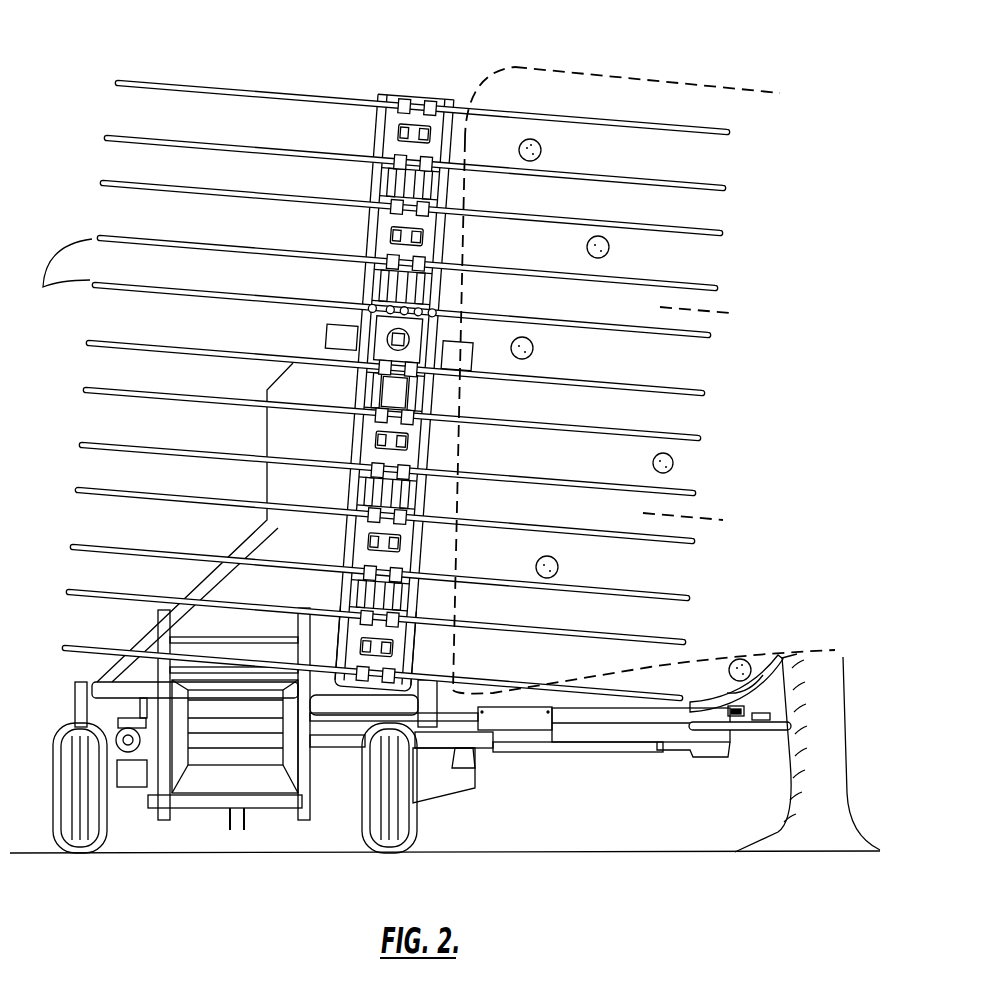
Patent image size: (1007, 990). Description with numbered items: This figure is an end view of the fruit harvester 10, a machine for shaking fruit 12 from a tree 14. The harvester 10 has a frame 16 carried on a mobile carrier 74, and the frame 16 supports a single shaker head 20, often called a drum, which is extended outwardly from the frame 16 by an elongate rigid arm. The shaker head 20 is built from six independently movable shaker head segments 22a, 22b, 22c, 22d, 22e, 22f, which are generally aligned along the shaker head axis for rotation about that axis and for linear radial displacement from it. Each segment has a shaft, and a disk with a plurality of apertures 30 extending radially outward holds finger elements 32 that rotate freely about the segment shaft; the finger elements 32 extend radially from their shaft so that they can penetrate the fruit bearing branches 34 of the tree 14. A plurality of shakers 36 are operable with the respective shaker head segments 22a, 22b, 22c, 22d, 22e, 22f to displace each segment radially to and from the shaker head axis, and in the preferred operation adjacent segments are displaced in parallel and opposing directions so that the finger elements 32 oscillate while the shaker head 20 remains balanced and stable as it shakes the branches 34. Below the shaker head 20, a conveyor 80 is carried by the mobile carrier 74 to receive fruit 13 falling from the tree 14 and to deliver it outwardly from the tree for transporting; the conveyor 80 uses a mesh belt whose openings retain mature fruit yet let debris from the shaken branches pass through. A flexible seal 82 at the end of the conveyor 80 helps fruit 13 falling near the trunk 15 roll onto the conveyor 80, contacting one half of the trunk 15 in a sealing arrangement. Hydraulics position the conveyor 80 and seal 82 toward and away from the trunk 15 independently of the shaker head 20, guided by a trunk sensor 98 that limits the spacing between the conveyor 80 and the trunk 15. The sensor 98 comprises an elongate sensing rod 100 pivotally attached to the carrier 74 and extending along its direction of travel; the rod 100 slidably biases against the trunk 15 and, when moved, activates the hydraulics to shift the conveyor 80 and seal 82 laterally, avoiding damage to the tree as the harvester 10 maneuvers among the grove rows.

The fruit harvester 10 is at (595, 90).
The fruit 12 is at (541, 145).
The fruit 13 is at (747, 661).
The tree 14 is at (713, 85).
The trunk 15 is at (843, 665).
The frame 16 is at (283, 427).
The shaker head 20 is at (103, 127).
The shaker head segment 22a is at (360, 140).
The shaker head segment 22b is at (350, 247).
The shaker head segment 22c is at (318, 345).
The shaker head segment 22d is at (333, 453).
The shaker head segment 22e is at (322, 552).
The shaker head segment 22f is at (364, 648).
The aperture 30 is at (533, 348).
The finger element 32 is at (57, 280).
The fruit bearing branches 34 is at (542, 92).
The shaker 36 is at (392, 350).
The mobile carrier 74 is at (143, 836).
The conveyor 80 is at (510, 707).
The flexible seal 82 is at (717, 703).
The trunk sensor 98 is at (736, 707).
The elongate sensing rod 100 is at (749, 727).